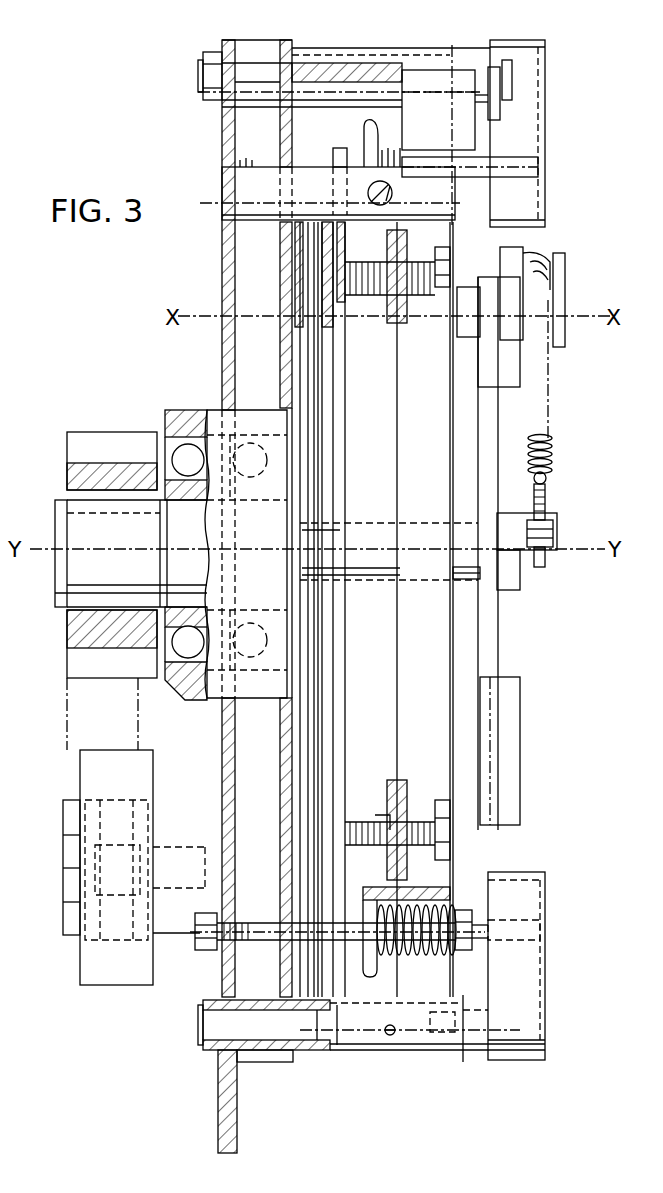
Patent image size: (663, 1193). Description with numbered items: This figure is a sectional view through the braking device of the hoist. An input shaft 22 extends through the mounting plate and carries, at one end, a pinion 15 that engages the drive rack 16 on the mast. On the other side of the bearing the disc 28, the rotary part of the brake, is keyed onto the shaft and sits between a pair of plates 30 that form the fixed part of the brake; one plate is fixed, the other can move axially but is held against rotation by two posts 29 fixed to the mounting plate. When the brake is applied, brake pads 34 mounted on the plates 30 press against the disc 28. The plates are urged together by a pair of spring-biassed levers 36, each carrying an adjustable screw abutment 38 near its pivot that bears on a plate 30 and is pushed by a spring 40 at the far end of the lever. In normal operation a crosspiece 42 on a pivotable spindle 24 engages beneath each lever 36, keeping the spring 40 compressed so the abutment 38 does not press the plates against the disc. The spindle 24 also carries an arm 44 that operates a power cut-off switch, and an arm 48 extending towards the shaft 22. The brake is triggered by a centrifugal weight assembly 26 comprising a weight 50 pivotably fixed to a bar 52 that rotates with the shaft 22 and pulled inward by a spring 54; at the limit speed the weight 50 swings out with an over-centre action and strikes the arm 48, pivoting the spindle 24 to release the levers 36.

The pinion 15 is at (83, 623).
The drive rack 16 is at (67, 712).
The input shaft 22 is at (470, 565).
The spindle 24 is at (376, 53).
The centrifugal weight assembly 26 is at (572, 303).
The disc 28 is at (310, 385).
The post 29 is at (315, 942).
The plate 30 is at (298, 712).
The brake pad 34 is at (330, 290).
The lever 36 is at (440, 787).
The adjustable screw abutment 38 is at (355, 285).
The spring 40 is at (408, 942).
The crosspiece 42 is at (388, 1036).
The arm 44 is at (463, 1062).
The arm 48 is at (523, 129).
The weight 50 is at (505, 320).
The bar 52 is at (487, 655).
The spring 54 is at (555, 448).